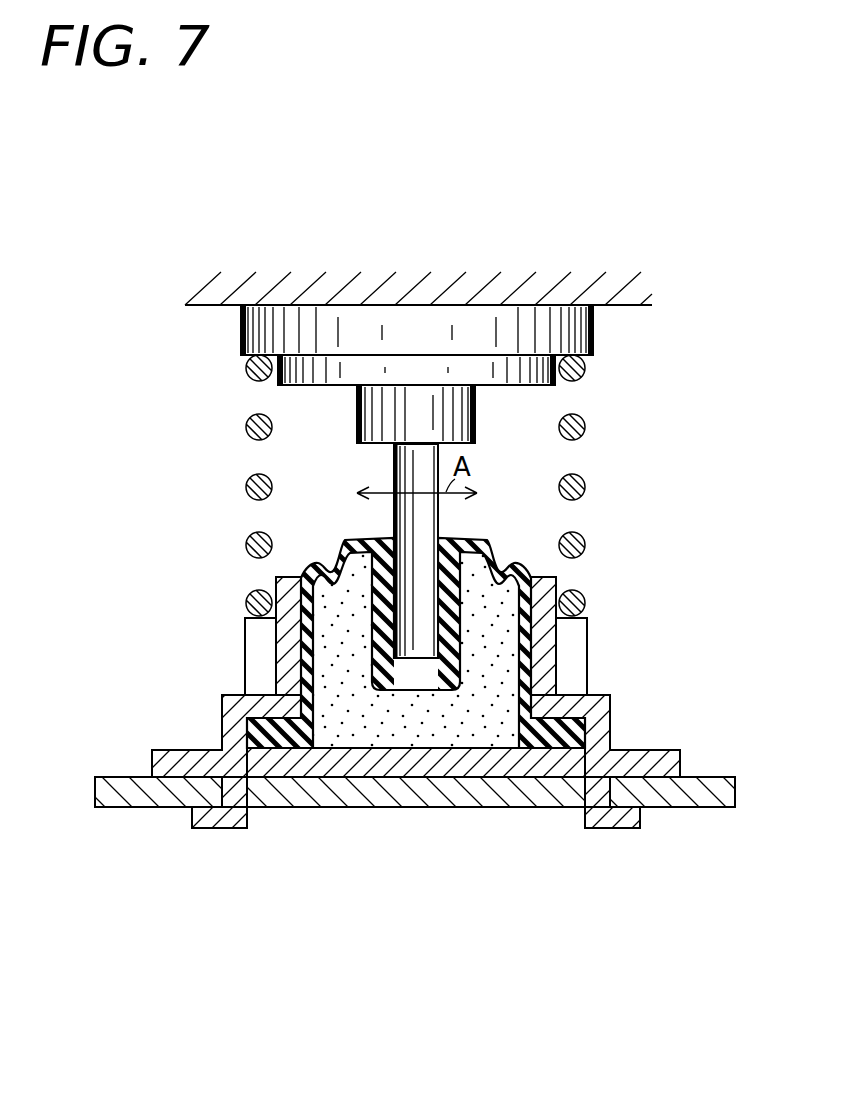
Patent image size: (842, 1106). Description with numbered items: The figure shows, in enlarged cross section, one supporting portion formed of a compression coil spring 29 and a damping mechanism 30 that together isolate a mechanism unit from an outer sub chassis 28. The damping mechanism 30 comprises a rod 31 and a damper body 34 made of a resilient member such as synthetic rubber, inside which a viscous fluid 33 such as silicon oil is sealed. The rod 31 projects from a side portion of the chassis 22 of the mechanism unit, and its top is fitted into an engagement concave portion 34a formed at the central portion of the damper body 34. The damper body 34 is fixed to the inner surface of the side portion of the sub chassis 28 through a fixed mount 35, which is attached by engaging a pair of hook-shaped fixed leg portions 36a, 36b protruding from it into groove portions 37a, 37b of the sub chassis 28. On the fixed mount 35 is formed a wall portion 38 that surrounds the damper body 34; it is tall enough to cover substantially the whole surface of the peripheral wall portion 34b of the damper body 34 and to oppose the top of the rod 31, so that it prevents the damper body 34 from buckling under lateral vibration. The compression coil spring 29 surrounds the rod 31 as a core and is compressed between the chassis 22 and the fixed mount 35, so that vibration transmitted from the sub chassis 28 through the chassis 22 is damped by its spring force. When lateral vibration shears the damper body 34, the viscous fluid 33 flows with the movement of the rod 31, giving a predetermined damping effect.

The chassis 22 is at (238, 306).
The compression coil spring 29 is at (584, 414).
The damping mechanism 30 is at (505, 551).
The rod 31 is at (415, 598).
The viscous fluid 33 is at (408, 727).
The damper body 34 is at (338, 560).
The engagement concave portion 34a is at (399, 653).
The peripheral wall portion 34b is at (527, 662).
The fixed mount 35 is at (610, 713).
The fixed leg portion 36a is at (224, 820).
The fixed leg portion 36b is at (613, 822).
The groove portion 37a is at (248, 822).
The groove portion 37b is at (578, 823).
The wall portion 38 is at (552, 592).
The sub chassis 28 is at (445, 809).